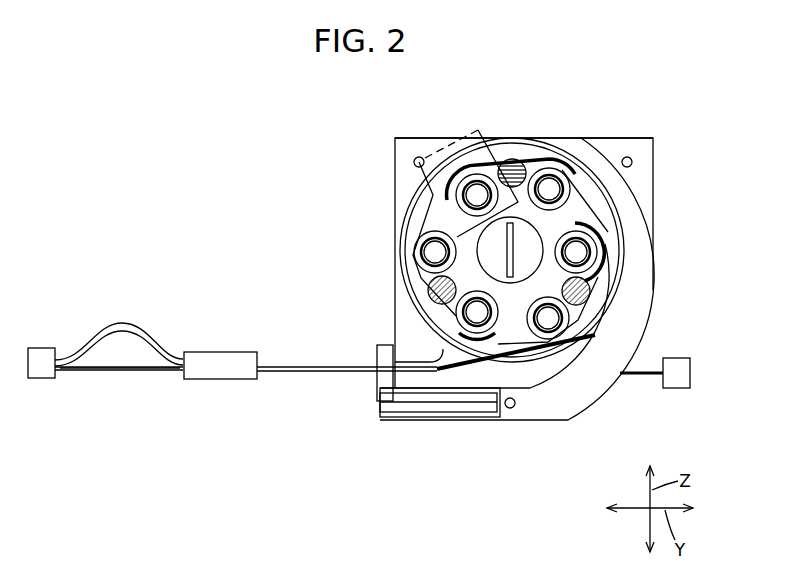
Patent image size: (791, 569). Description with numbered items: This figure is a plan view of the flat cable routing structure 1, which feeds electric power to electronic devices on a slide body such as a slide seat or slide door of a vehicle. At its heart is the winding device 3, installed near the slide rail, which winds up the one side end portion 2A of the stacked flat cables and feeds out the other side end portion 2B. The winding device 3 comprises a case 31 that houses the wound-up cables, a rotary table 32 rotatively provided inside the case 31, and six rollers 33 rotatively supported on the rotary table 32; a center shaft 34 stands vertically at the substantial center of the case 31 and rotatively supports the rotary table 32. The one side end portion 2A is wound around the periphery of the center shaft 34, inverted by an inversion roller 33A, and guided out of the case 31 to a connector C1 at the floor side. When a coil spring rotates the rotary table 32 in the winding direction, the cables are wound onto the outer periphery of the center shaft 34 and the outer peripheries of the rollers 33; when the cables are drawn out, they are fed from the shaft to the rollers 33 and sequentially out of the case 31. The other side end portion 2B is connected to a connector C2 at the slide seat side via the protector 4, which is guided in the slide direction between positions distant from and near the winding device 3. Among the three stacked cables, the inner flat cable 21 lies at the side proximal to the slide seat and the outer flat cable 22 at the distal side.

The flat cable routing structure 1 is at (690, 112).
The one side end portion 2A is at (353, 375).
The other side end portion 2B is at (415, 376).
The inner flat cable 21 is at (126, 330).
The outer flat cable 22 is at (137, 367).
The winding device 3 is at (638, 138).
The case 31 is at (415, 138).
The rotary table 32 is at (418, 195).
The rollers 33 is at (455, 200).
The inversion roller 33A is at (415, 160).
The center shaft 34 is at (532, 257).
The protector 4 is at (221, 352).
The connector C1 is at (675, 358).
The connector C2 is at (45, 348).